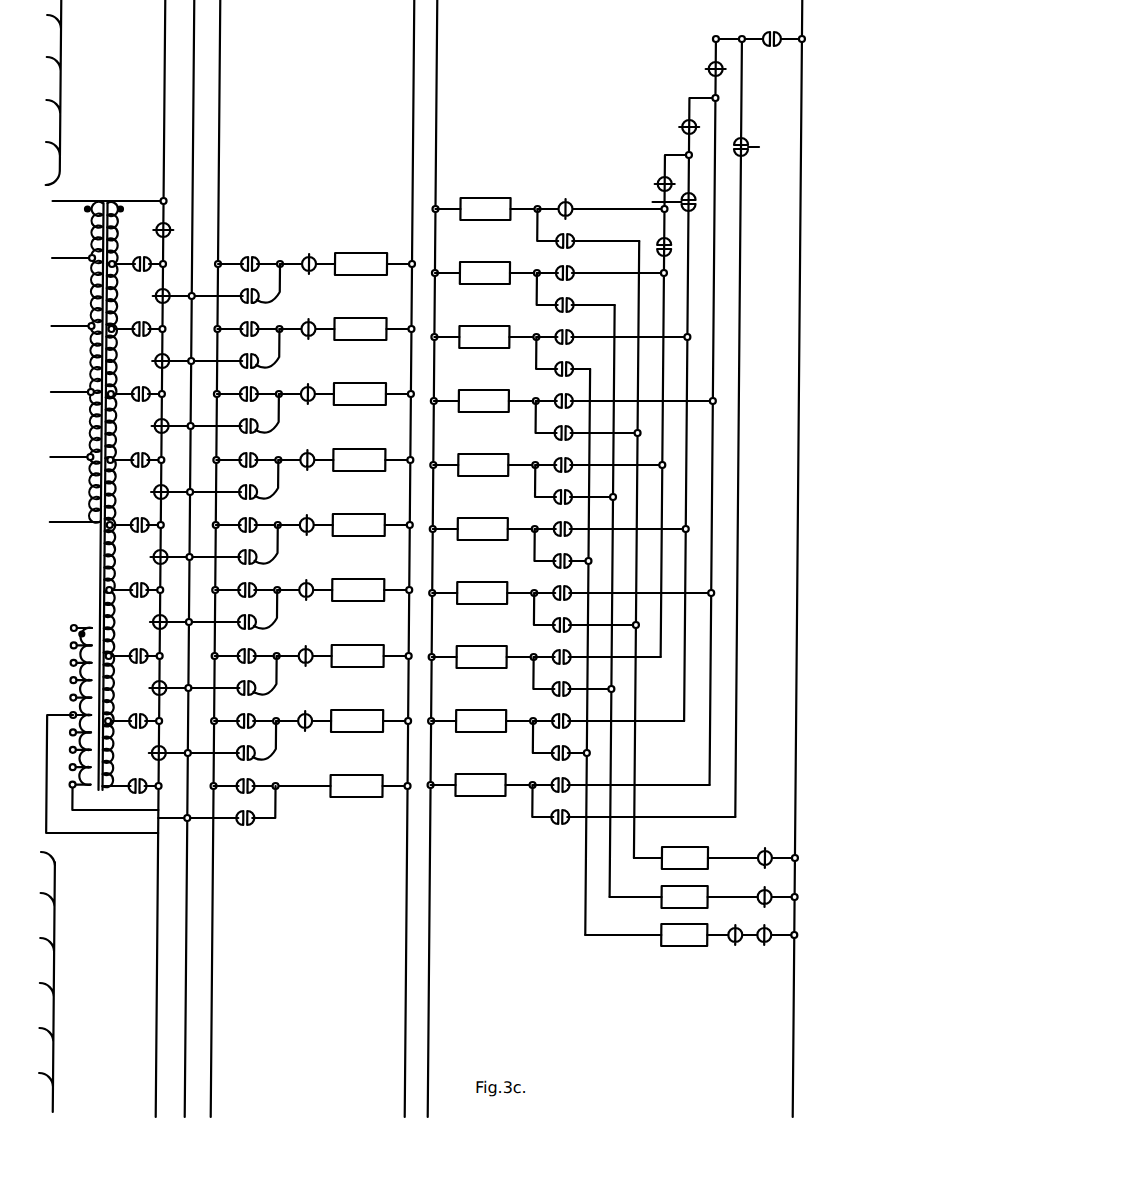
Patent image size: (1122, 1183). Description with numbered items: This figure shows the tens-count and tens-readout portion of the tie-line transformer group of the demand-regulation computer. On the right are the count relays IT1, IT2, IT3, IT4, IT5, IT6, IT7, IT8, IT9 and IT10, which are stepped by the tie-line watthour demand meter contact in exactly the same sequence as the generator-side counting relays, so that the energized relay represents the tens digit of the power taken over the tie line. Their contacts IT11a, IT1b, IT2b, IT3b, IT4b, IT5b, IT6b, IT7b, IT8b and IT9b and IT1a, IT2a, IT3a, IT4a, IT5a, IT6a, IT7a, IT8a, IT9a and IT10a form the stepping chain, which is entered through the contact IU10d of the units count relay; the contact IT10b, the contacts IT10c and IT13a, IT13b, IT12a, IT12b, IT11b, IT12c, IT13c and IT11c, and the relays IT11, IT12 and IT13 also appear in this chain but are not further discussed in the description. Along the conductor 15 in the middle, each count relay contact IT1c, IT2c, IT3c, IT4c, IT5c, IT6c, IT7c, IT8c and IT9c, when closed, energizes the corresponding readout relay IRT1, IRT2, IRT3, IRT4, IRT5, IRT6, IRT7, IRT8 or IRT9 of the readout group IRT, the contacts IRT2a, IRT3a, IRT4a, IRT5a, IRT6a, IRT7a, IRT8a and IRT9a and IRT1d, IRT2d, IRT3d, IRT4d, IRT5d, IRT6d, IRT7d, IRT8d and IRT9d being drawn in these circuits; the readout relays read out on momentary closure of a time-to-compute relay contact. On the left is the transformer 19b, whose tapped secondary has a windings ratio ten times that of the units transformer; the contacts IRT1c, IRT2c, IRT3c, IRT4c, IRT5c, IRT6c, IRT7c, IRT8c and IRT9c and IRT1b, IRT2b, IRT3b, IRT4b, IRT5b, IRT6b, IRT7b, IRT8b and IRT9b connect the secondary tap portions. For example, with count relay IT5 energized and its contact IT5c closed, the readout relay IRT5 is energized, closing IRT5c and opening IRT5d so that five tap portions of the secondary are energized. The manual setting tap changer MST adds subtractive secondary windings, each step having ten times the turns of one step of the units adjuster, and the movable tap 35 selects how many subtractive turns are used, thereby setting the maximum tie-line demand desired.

The transformer 19b is at (105, 198).
The supply bus 15 is at (252, 210).
The readout relay group IRT is at (366, 210).
The manual setting tap changer MST is at (68, 670).
The movable tap 35 is at (64, 714).
The readout relay IRT1 is at (375, 264).
The readout relay IRT2 is at (374, 329).
The readout relay IRT3 is at (374, 394).
The readout relay IRT4 is at (373, 460).
The readout relay IRT5 is at (373, 525).
The readout relay IRT6 is at (372, 590).
The readout relay IRT7 is at (372, 656).
The readout relay IRT8 is at (371, 721).
The readout relay IRT9 is at (370, 786).
The readout relay contact IRT1b is at (157, 227).
The readout relay contact IRT2b is at (157, 293).
The readout relay contact IRT3b is at (157, 358).
The readout relay contact IRT4b is at (157, 423).
The readout relay contact IRT5b is at (157, 489).
The readout relay contact IRT6b is at (157, 554).
The readout relay contact IRT7b is at (157, 619).
The readout relay contact IRT8b is at (157, 685).
The readout relay contact IRT9b is at (157, 750).
The readout relay contact IRT1c is at (153, 253).
The readout relay contact IRT2c is at (153, 318).
The readout relay contact IRT3c is at (153, 383).
The readout relay contact IRT4c is at (153, 449).
The readout relay contact IRT5c is at (153, 514).
The readout relay contact IRT6c is at (153, 579).
The readout relay contact IRT7c is at (153, 645).
The readout relay contact IRT8c is at (153, 710).
The readout relay contact IRT9c is at (150, 800).
The readout relay back contact IRT1d is at (280, 304).
The readout relay back contact IRT2d is at (280, 369).
The readout relay back contact IRT3d is at (280, 434).
The readout relay back contact IRT4d is at (280, 500).
The readout relay back contact IRT5d is at (280, 565).
The readout relay back contact IRT6d is at (280, 630).
The readout relay back contact IRT7d is at (280, 696).
The readout relay back contact IRT8d is at (280, 761).
The readout relay back contact IRT9d is at (218, 818).
The readout relay contact IRT2a is at (309, 254).
The readout relay contact IRT3a is at (309, 319).
The readout relay contact IRT4a is at (309, 384).
The readout relay contact IRT5a is at (309, 450).
The readout relay contact IRT6a is at (309, 515).
The readout relay contact IRT7a is at (309, 580).
The readout relay contact IRT8a is at (309, 646).
The readout relay contact IRT9a is at (309, 711).
The count relay contact IT1c is at (249, 257).
The count relay contact IT2c is at (248, 322).
The count relay contact IT3c is at (248, 387).
The count relay contact IT4c is at (248, 453).
The count relay contact IT5c is at (248, 518).
The count relay contact IT6c is at (248, 583).
The count relay contact IT7c is at (248, 649).
The count relay contact IT8c is at (248, 714).
The count relay contact IT9c is at (248, 779).
The count relay IT1 is at (486, 209).
The count relay IT2 is at (486, 273).
The count relay IT3 is at (485, 337).
The count relay IT4 is at (485, 401).
The count relay IT5 is at (484, 465).
The count relay IT6 is at (484, 529).
The count relay IT7 is at (483, 593).
The count relay IT8 is at (483, 657).
The count relay IT9 is at (482, 721).
The count relay IT10 is at (481, 785).
The relay IT11 is at (696, 858).
The relay IT12 is at (684, 897).
The relay IT13 is at (656, 935).
The relay contact IT11a is at (576, 204).
The count relay contact IT1b is at (563, 267).
The count relay contact IT2b is at (563, 331).
The count relay contact IT3b is at (559, 395).
The count relay contact IT4b is at (559, 459).
The count relay contact IT5b is at (559, 523).
The count relay contact IT6b is at (559, 587).
The count relay contact IT7b is at (559, 651).
The count relay contact IT8b is at (559, 715).
The count relay contact IT9b is at (559, 779).
The count relay contact IT1a is at (565, 236).
The count relay contact IT2a is at (565, 300).
The count relay contact IT3a is at (565, 364).
The count relay contact IT4a is at (535, 433).
The count relay contact IT5a is at (535, 497).
The count relay contact IT6a is at (535, 561).
The count relay contact IT7a is at (535, 625).
The count relay contact IT8a is at (535, 689).
The count relay contact IT9a is at (535, 753).
The count relay contact IT10a is at (557, 824).
The units count relay contact IU10d is at (778, 29).
The count relay contact IT10b is at (705, 69).
The relay contact IT13a is at (680, 128).
The relay contact IT13b is at (769, 146).
The relay contact IT12a is at (654, 184).
The relay contact IT12b is at (651, 201).
The relay contact IT11b is at (661, 239).
The relay contact IT12c is at (767, 852).
The relay contact IT13c is at (767, 891).
The relay contact IT11c is at (738, 945).
The count relay contact IT10c is at (768, 929).